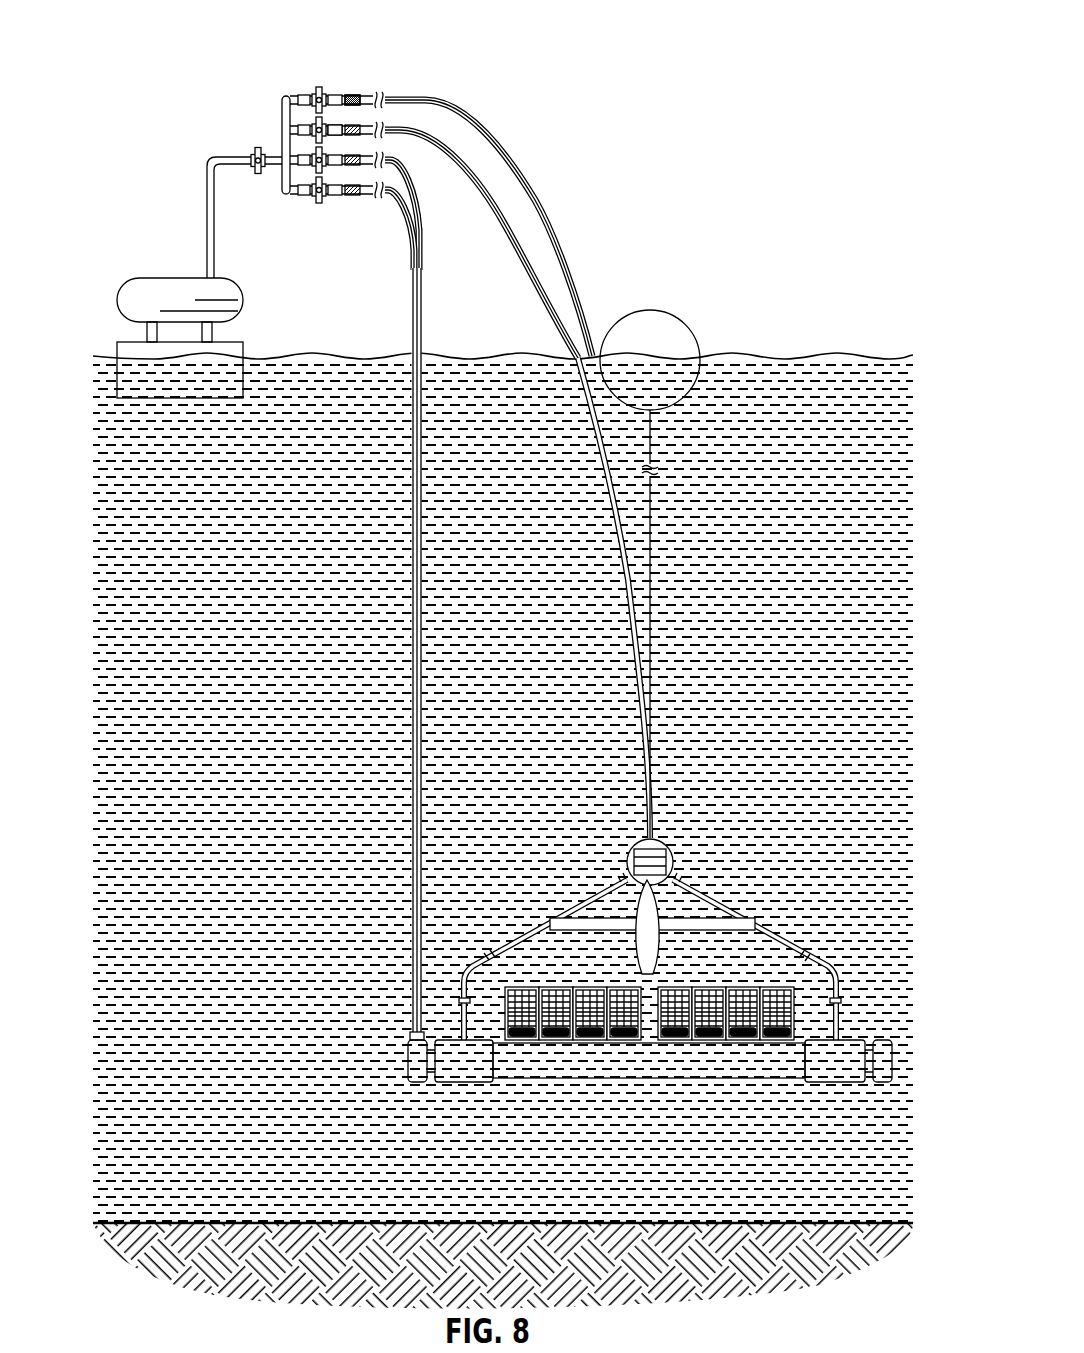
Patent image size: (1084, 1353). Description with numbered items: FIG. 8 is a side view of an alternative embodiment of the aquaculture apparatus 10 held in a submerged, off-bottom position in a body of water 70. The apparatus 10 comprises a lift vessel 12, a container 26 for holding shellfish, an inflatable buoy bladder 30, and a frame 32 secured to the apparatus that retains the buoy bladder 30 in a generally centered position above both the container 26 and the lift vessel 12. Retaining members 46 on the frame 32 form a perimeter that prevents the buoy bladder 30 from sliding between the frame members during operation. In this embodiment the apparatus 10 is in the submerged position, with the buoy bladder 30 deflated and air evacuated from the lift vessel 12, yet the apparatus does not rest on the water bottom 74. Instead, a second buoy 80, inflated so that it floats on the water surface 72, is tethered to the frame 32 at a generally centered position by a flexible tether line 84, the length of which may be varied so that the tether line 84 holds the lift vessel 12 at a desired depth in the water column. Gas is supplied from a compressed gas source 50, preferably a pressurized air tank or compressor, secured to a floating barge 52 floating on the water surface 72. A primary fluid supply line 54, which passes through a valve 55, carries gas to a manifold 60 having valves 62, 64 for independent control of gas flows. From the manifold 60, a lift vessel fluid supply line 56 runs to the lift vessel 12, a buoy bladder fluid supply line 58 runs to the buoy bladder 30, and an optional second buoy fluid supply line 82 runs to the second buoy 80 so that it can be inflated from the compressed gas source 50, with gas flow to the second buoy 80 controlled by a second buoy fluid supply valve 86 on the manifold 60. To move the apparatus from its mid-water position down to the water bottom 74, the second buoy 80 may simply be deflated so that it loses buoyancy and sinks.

The aquaculture apparatus 10 is at (163, 87).
The lift vessel 12 is at (637, 1068).
The container 26 is at (548, 985).
The inflatable buoy bladder 30 is at (650, 902).
The frame 32 is at (829, 954).
The retaining members 46 is at (567, 923).
The compressed gas source 50 is at (135, 293).
The floating barge 52 is at (127, 348).
The primary fluid supply line 54 is at (207, 195).
The main valve 55 is at (257, 148).
The lift vessel fluid supply line 56 is at (366, 230).
The buoy bladder fluid supply line 58 is at (497, 210).
The manifold 60 is at (283, 108).
The valve 62 is at (287, 188).
The valve 64 is at (310, 126).
The water body 70 is at (234, 569).
The water surface 72 is at (317, 347).
The water bottom 74 is at (122, 1213).
The second buoy 80 is at (665, 330).
The second buoy fluid supply line 82 is at (430, 96).
The flexible tether line 84 is at (652, 523).
The second buoy fluid supply valve 86 is at (328, 93).